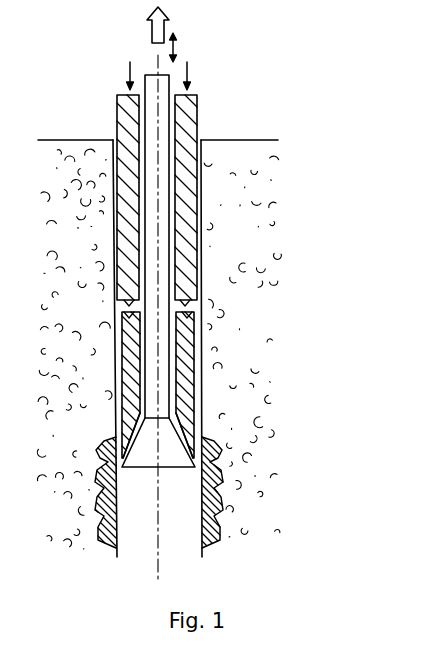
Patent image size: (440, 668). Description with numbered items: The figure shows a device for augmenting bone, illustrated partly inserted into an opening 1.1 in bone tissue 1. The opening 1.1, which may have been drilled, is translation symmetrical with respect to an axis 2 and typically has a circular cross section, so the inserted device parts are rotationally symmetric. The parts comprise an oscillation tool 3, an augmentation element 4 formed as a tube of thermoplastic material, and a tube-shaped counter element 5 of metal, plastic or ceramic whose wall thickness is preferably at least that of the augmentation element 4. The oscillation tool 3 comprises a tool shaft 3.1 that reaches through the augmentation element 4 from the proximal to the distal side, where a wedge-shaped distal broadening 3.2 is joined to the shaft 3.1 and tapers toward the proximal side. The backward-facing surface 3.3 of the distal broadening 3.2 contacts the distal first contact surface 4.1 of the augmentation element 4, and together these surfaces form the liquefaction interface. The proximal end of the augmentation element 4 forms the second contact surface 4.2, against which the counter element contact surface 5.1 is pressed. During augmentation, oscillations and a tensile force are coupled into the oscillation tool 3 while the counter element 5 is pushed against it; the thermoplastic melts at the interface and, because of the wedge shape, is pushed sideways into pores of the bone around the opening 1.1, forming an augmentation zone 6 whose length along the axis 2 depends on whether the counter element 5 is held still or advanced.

The bone tissue 1 is at (242, 150).
The opening 1.1 is at (200, 134).
The axis 2 is at (160, 563).
The oscillation tool 3 is at (152, 75).
The tool shaft 3.1 is at (160, 252).
The distal broadening 3.2 is at (143, 455).
The backward-facing surface 3.3 is at (125, 453).
The augmentation element 4 is at (194, 354).
The distal first contact surface 4.1 is at (188, 436).
The second augmentation element contact surface 4.2 is at (180, 309).
The counter element 5 is at (115, 112).
The counter element contact surface 5.1 is at (127, 307).
The augmentation zone 6 is at (88, 515).